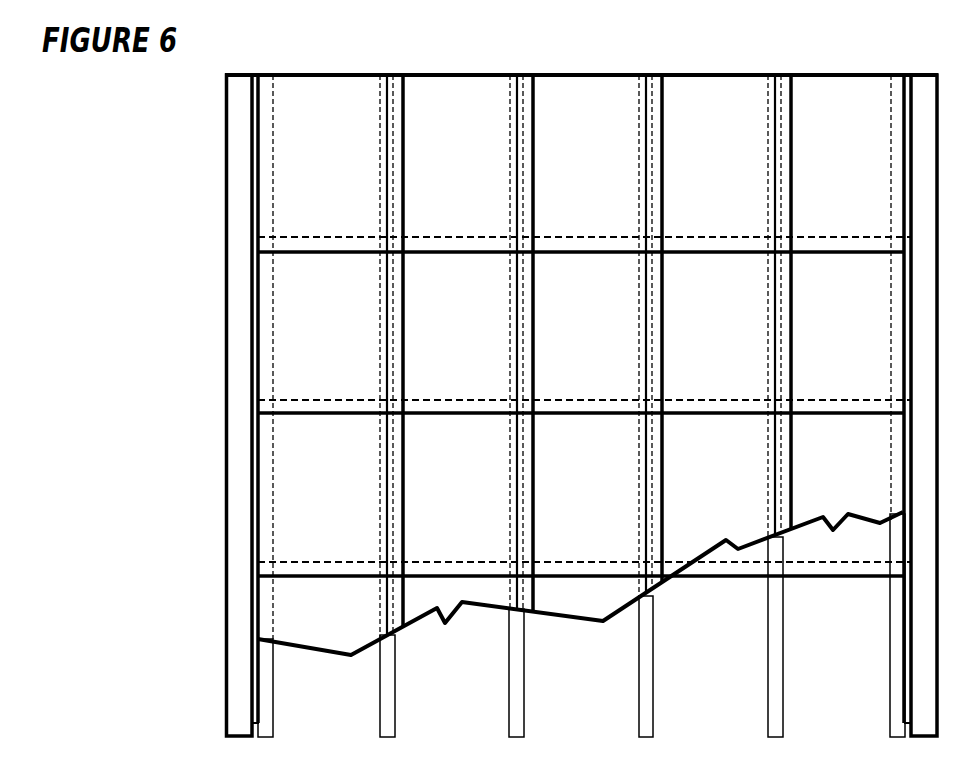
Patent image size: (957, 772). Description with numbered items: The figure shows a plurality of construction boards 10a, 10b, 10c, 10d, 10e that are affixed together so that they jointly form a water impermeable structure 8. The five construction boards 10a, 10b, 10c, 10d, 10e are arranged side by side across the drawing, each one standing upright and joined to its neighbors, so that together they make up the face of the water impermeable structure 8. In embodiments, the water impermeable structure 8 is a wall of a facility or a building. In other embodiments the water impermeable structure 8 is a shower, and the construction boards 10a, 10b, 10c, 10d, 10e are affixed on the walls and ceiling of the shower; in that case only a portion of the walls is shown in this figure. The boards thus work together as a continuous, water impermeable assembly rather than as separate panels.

The water impermeable structure 8 is at (273, 67).
The construction board 10a is at (322, 88).
The construction board 10b is at (455, 88).
The construction board 10c is at (589, 88).
The construction board 10d is at (712, 88).
The construction board 10e is at (845, 88).